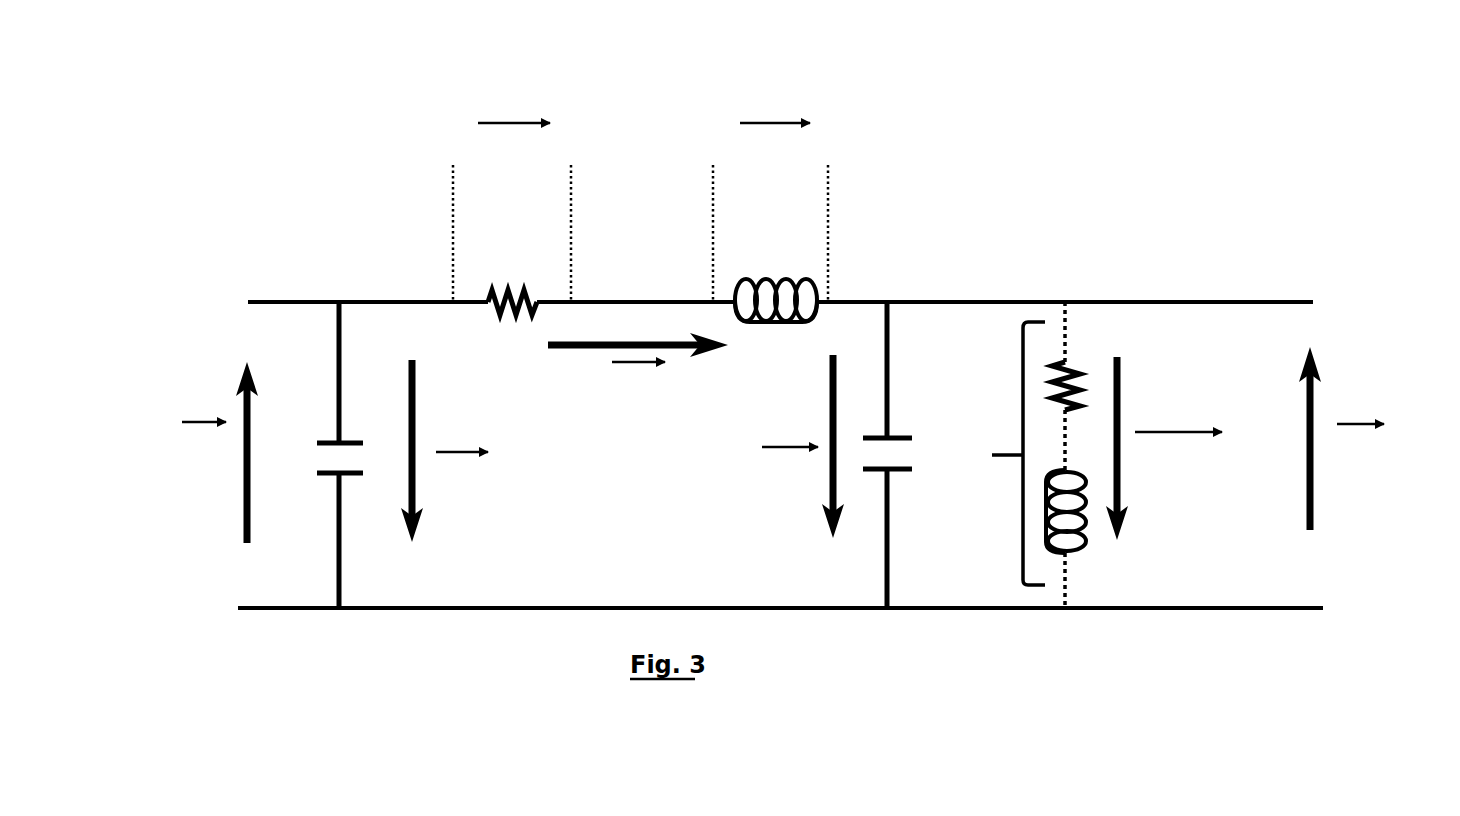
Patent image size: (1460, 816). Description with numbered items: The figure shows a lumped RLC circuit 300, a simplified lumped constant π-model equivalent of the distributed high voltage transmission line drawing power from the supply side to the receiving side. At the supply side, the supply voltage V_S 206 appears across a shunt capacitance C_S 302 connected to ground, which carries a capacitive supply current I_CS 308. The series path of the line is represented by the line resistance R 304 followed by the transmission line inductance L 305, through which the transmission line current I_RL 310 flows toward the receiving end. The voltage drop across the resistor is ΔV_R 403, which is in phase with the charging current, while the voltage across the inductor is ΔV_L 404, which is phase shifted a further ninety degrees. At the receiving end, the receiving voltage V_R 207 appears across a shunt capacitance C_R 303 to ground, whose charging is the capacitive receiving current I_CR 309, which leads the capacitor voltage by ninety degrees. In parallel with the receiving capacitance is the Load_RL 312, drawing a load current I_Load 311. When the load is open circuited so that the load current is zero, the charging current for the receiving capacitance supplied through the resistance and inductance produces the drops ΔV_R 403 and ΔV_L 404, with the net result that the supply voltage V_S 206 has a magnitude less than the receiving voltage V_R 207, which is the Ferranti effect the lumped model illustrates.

The lumped RLC circuit 300 is at (262, 232).
The shunt capacitance C_S 302 is at (315, 455).
The shunt capacitance C_R 303 is at (917, 455).
The line resistance R 304 is at (512, 262).
The transmission line inductance L 305 is at (776, 266).
The capacitive supply current I_CS 308 is at (444, 451).
The capacitive receiving current I_CR 309 is at (803, 446).
The transmission line current I_RL 310 is at (638, 387).
The load current I_Load 311 is at (1164, 448).
The Load_RL 312 is at (992, 456).
The voltage ΔV_R 403 is at (528, 212).
The voltage ΔV_L 404 is at (789, 212).
The supply voltage V_S 206 is at (184, 452).
The receiving voltage V_R 207 is at (1369, 438).